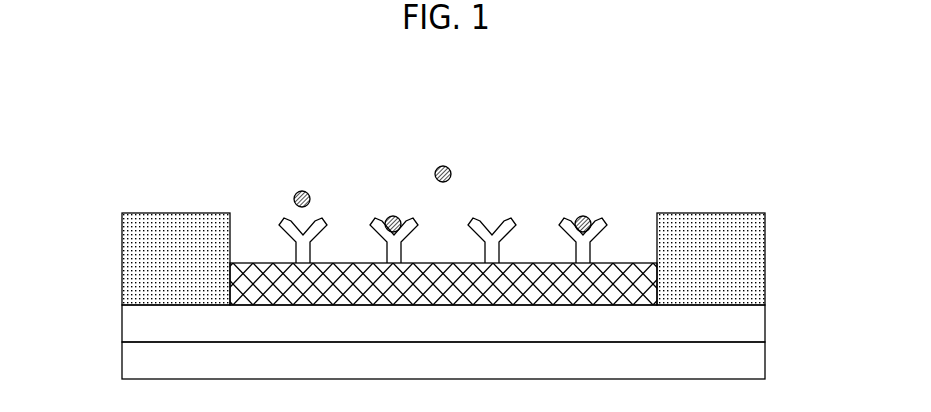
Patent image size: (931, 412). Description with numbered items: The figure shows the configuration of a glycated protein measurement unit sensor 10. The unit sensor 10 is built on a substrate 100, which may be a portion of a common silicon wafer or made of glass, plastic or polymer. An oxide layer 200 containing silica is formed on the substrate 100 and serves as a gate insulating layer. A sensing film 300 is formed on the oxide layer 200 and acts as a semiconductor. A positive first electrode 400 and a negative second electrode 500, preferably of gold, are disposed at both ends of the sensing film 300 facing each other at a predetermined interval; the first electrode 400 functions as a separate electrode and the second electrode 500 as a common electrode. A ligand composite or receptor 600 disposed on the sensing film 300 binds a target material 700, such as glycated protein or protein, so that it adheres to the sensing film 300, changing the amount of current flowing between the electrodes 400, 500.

The unit sensor 10 is at (130, 132).
The substrate 100 is at (762, 358).
The oxide layer 200 is at (762, 321).
The sensing film 300 is at (640, 287).
The first electrode 400 is at (132, 228).
The second electrode 500 is at (762, 223).
The ligand composite or receptor 600 is at (598, 227).
The target material 700 is at (451, 171).